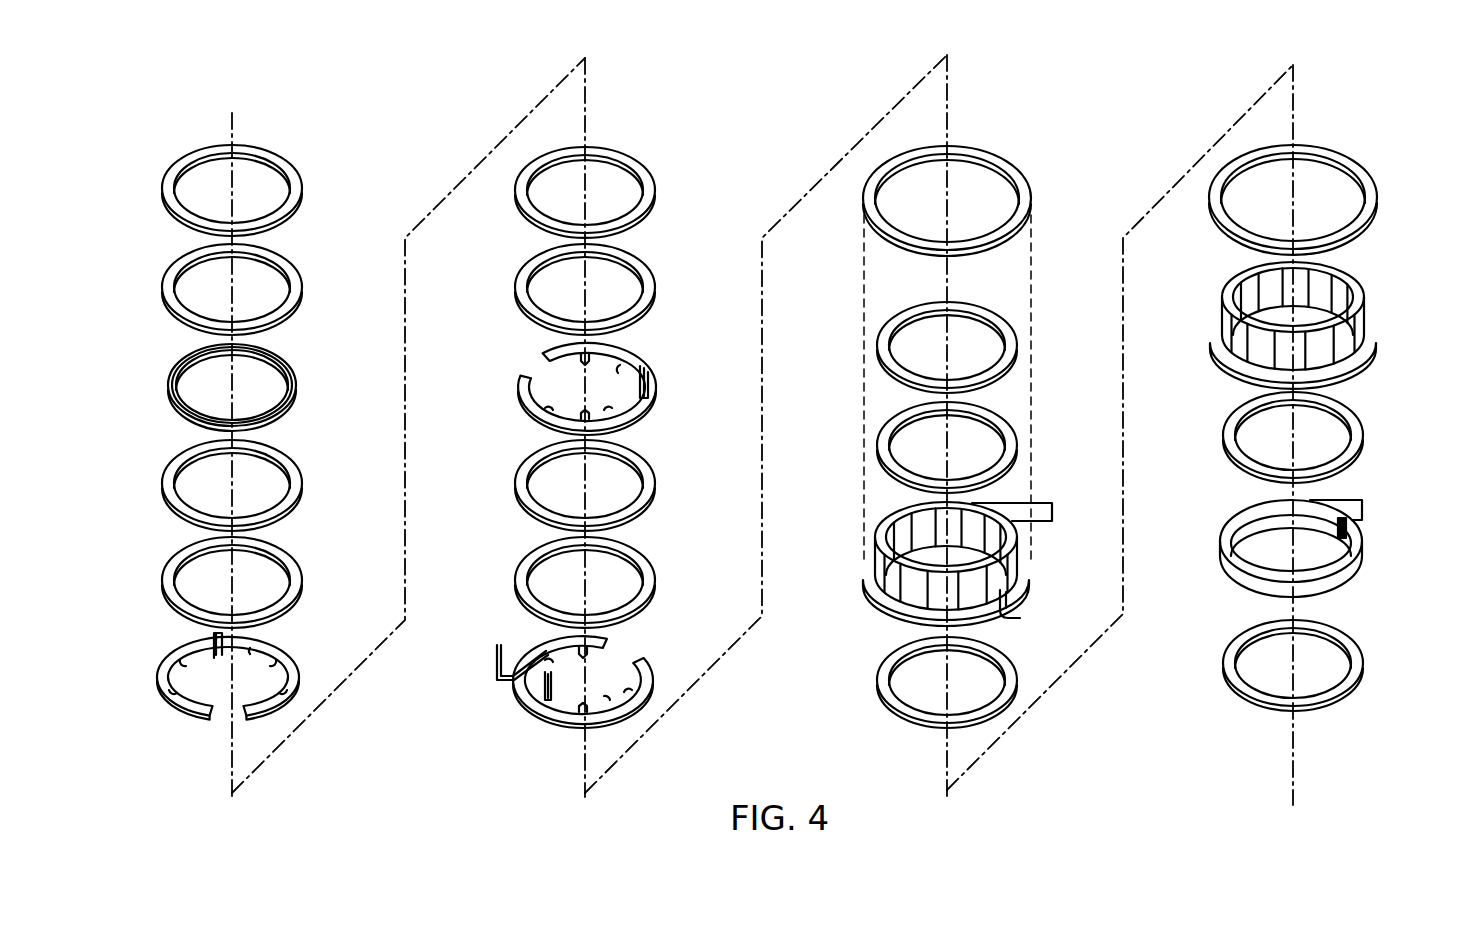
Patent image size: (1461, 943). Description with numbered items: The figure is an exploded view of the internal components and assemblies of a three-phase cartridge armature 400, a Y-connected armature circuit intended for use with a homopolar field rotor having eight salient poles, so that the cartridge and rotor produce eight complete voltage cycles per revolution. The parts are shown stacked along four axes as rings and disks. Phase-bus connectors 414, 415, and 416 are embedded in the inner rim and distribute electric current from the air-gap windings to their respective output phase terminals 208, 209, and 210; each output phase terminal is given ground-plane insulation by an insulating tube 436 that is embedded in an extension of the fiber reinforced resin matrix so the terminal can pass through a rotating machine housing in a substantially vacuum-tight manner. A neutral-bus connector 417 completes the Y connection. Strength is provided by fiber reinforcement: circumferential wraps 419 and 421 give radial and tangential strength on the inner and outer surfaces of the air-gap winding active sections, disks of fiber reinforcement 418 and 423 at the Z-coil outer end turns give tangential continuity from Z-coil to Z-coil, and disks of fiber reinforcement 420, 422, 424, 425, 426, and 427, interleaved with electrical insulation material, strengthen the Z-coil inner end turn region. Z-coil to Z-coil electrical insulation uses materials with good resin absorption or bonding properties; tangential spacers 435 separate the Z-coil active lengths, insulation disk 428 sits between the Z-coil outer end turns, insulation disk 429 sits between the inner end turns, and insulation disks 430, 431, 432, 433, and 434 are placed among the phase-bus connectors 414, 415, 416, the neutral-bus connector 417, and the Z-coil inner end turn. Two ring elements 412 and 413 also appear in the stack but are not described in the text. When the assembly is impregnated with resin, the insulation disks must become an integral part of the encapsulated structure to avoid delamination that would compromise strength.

The seal assembly 400 is at (1086, 110).
The locking ring 412 is at (1372, 325).
The locking ring 413 is at (1022, 560).
The phase-bus connector 414 is at (625, 645).
The phase-bus connector 415 is at (643, 365).
The phase-bus connector 416 is at (275, 650).
The neutral-bus connector 417 is at (292, 366).
The disk of fiber reinforcement 418 is at (1352, 648).
The circumferential wrap of fiber reinforcement 419 is at (1360, 550).
The disk of fiber reinforcement 420 is at (1352, 420).
The circumferential wrap of fiber reinforcement 421 is at (1020, 503).
The disk of fiber reinforcement 422 is at (1005, 330).
The disk of fiber reinforcement 423 is at (1021, 180).
The disk of fiber reinforcement 424 is at (644, 465).
The disk of fiber reinforcement 425 is at (644, 172).
The disk of fiber reinforcement 426 is at (291, 465).
The disk of fiber reinforcement 427 is at (291, 170).
The insulation disk 428 is at (1370, 182).
The insulation disk 429 is at (1005, 665).
The insulation disk 430 is at (1005, 430).
The insulation disk 431 is at (644, 562).
The insulation disk 432 is at (644, 268).
The insulation disk 433 is at (291, 562).
The insulation disk 434 is at (291, 268).
The tangential spacer 435 is at (1020, 612).
The insulating tube 436 is at (497, 668).
The output phase terminal 208 is at (545, 702).
The output phase terminal 209 is at (648, 400).
The output phase terminal 210 is at (213, 642).